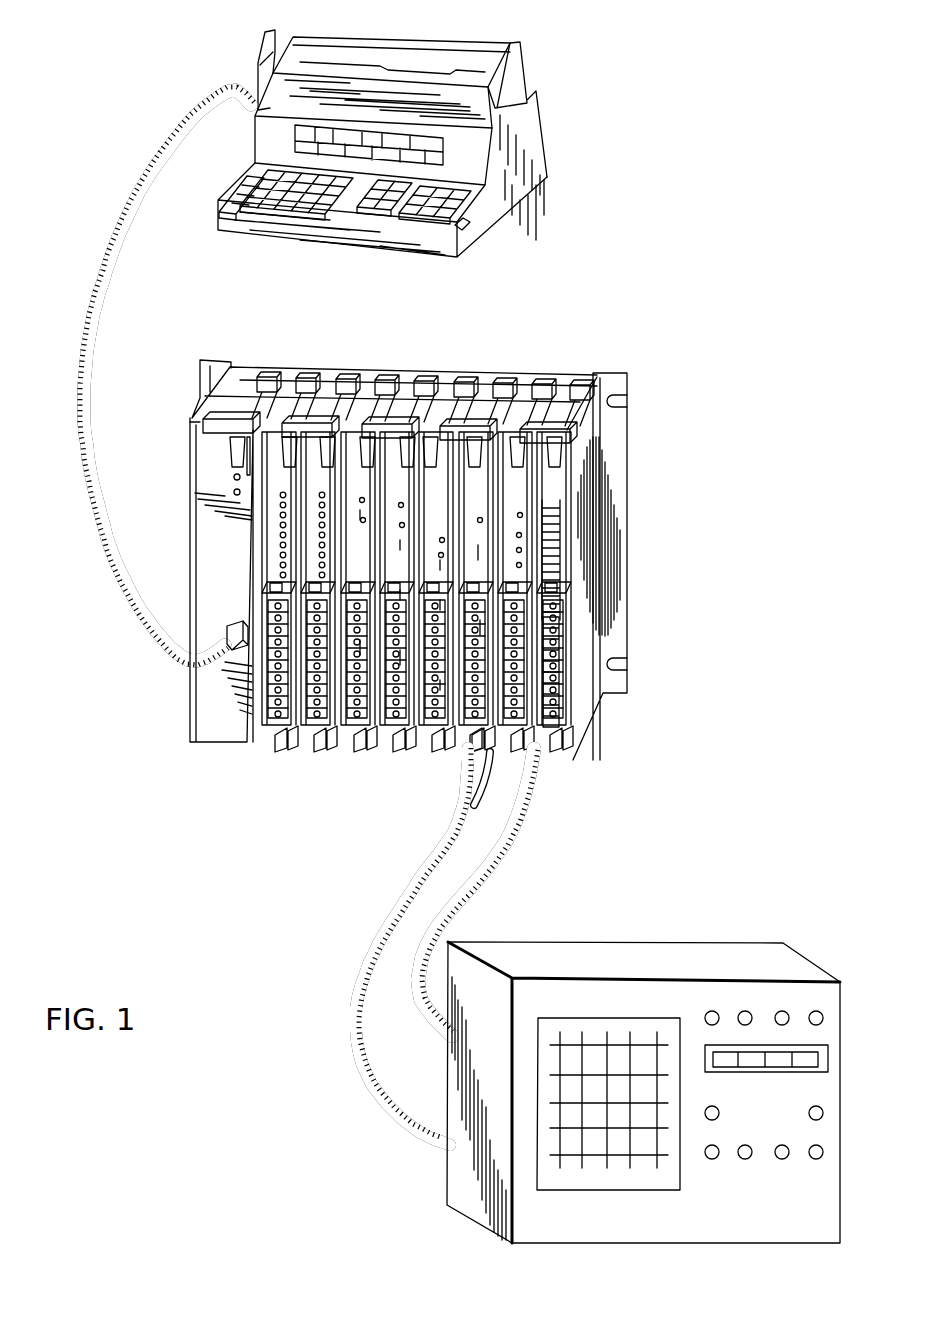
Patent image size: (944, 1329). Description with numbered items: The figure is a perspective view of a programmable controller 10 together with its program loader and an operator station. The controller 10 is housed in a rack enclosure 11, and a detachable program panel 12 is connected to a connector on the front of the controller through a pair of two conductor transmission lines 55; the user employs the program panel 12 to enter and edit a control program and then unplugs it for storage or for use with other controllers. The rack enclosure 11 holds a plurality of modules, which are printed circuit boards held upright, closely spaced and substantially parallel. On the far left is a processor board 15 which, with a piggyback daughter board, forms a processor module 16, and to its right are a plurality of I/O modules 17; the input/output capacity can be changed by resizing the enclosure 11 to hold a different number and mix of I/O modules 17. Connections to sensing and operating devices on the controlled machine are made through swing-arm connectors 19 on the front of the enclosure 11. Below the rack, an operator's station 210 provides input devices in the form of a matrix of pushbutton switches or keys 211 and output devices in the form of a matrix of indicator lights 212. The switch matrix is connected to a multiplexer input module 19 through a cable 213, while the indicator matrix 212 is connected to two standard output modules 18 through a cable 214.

The programmable controller 10 is at (690, 373).
The rack enclosure 11 is at (620, 455).
The program panel 12 is at (428, 42).
The processor board 15 is at (252, 400).
The processor module 16 is at (236, 593).
The I/O modules 17 is at (366, 398).
The standard output modules 18 is at (445, 738).
The swing-arm connectors 19 is at (560, 692).
The two conductor transmission lines 55 is at (120, 214).
The operator's station 210 is at (654, 934).
The pushbutton switches or keys 211 is at (590, 1075).
The indicator lights 212 is at (775, 992).
The cable 213 is at (470, 886).
The cable 214 is at (382, 944).